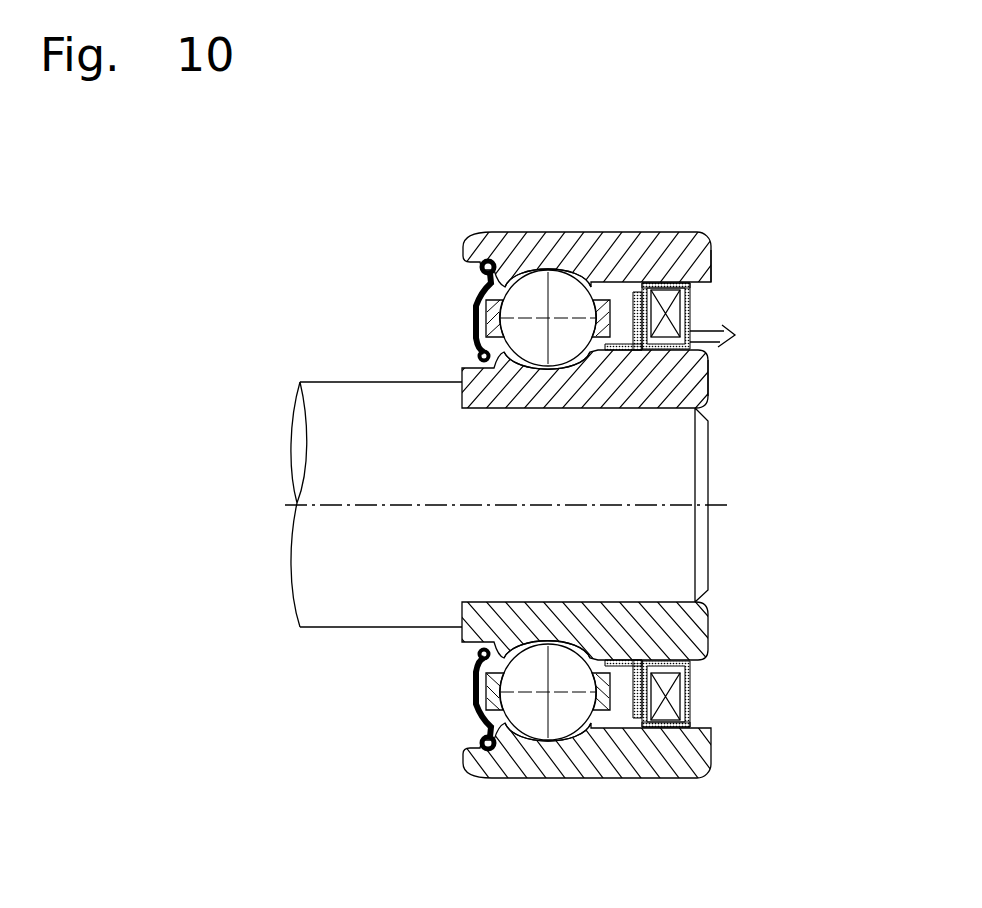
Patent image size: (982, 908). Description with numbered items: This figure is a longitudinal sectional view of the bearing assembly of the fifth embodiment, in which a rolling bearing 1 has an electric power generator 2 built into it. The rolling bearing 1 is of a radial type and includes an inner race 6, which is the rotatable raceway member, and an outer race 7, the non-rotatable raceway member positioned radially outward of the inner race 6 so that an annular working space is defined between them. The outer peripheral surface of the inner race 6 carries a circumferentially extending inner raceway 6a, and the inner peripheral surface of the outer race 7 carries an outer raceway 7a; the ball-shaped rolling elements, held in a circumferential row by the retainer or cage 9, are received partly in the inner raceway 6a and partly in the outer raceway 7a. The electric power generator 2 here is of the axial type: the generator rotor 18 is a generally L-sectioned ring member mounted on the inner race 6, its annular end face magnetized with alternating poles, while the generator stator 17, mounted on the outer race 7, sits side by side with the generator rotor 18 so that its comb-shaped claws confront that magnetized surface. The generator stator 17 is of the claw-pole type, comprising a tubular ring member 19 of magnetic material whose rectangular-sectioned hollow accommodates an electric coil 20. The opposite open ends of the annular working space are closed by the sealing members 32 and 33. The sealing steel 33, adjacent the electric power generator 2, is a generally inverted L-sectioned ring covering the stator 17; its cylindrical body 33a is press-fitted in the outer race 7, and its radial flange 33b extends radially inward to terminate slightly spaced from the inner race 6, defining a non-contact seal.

The rolling bearing 1 is at (351, 245).
The electric power generator 2 is at (880, 307).
The inner race 6 is at (463, 368).
The inner raceway 6a is at (536, 352).
The outer race 7 is at (473, 242).
The outer raceway 7a is at (553, 268).
The retainer or cage 9 is at (483, 330).
The generator stator 17 is at (693, 316).
The generator rotor 18 is at (708, 390).
The ring member 19 is at (650, 290).
The electric coil 20 is at (665, 292).
The sealing member 32 is at (477, 298).
The sealing steel 33 is at (693, 297).
The cylindrical body 33a is at (675, 278).
The radial flange 33b is at (703, 331).